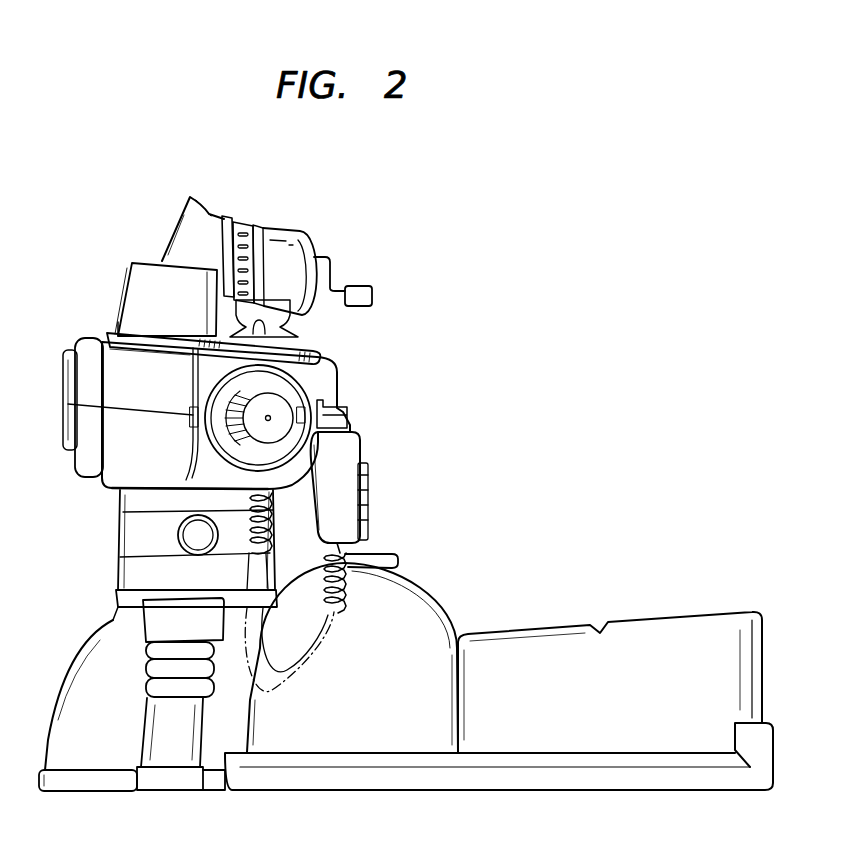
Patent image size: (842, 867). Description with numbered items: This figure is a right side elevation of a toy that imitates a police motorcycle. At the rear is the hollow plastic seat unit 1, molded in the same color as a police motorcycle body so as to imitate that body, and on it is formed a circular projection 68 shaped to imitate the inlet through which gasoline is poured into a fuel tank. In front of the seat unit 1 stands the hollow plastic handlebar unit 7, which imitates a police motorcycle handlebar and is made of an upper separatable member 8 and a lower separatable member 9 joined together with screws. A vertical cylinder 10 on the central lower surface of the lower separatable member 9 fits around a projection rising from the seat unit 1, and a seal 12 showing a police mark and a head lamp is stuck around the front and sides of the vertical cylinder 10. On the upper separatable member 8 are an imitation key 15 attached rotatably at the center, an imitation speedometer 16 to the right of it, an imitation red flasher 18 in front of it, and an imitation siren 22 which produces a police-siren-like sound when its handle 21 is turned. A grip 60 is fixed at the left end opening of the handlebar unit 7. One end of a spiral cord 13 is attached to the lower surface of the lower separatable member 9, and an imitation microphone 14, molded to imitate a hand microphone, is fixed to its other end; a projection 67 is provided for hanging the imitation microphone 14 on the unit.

The seat unit 1 is at (653, 623).
The handlebar unit 7 is at (133, 328).
The upper separatable member 8 is at (154, 390).
The lower separatable member 9 is at (154, 453).
The vertical cylinder 10 is at (125, 570).
The seal 12 is at (197, 547).
The spiral cord 13 is at (247, 540).
The imitation microphone 14 is at (350, 497).
The imitation key 15 is at (292, 313).
The imitation speedometer 16 is at (320, 356).
The imitation red flasher 18 is at (132, 265).
The handle 21 is at (353, 290).
The imitation siren 22 is at (172, 220).
The grip 60 is at (232, 430).
The projection 67 is at (347, 413).
The circular projection 68 is at (397, 555).